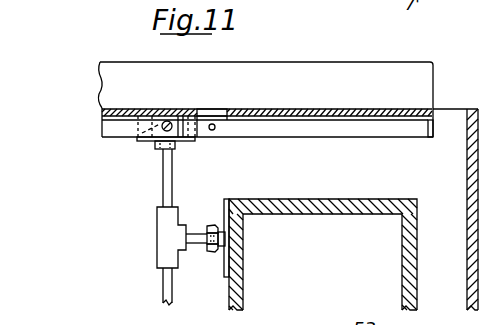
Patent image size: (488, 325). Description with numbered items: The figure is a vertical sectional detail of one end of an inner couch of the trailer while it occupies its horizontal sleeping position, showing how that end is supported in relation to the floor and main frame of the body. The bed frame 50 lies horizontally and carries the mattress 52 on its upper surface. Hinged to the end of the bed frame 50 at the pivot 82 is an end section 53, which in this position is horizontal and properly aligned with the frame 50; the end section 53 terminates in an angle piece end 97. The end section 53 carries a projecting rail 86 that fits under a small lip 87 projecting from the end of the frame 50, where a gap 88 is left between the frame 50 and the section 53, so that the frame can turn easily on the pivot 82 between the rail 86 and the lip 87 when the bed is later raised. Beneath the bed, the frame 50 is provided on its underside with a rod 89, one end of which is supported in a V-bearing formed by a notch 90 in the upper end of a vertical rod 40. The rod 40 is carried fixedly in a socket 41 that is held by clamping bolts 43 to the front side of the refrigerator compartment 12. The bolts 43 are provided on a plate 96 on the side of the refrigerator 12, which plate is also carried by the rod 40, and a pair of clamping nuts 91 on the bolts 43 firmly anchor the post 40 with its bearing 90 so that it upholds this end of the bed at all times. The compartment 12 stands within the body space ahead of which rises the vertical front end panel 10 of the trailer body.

The front end panel 10 is at (466, 204).
The refrigerator compartment 12 is at (302, 225).
The vertical rod 40 is at (163, 177).
The socket 41 is at (163, 222).
The clamping bolts 43 is at (212, 228).
The bed frame 50 is at (120, 108).
The mattress 52 is at (337, 63).
The end section 53 is at (342, 118).
The pivot 82 is at (216, 128).
The projecting rail 86 is at (198, 136).
The lip 87 is at (190, 108).
The gap 88 is at (223, 108).
The rod 89 is at (168, 121).
The notch 90 is at (141, 139).
The clamping nuts 91 is at (217, 251).
The plate 96 is at (226, 268).
The angle piece end 97 is at (433, 138).